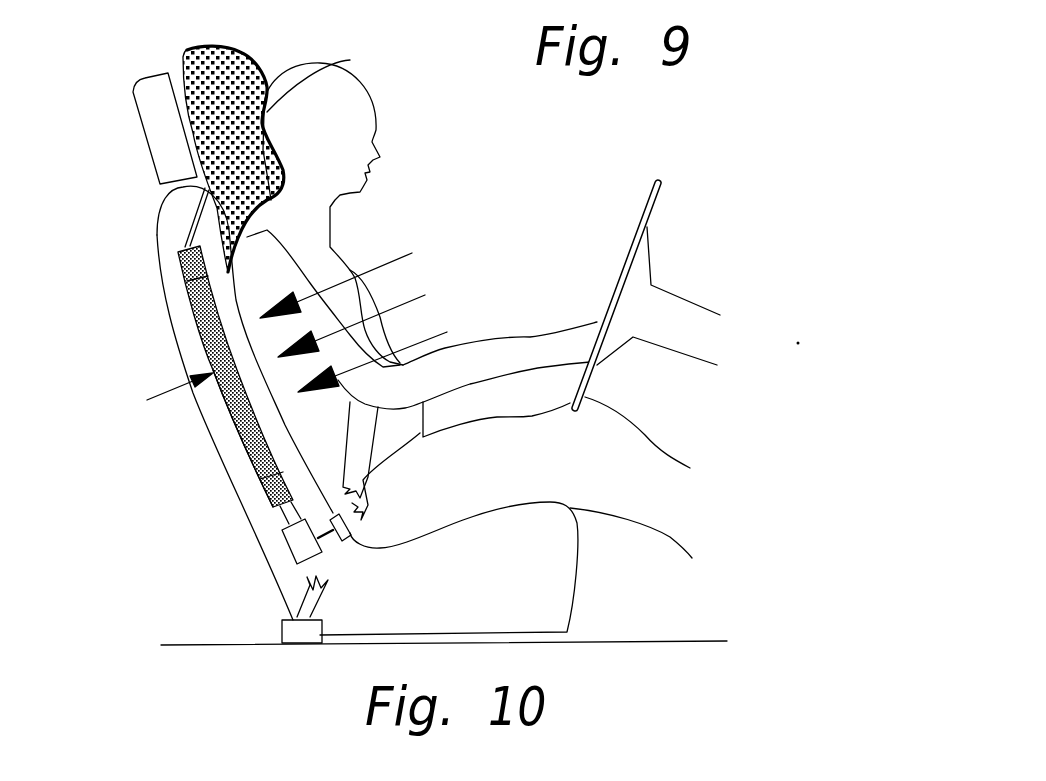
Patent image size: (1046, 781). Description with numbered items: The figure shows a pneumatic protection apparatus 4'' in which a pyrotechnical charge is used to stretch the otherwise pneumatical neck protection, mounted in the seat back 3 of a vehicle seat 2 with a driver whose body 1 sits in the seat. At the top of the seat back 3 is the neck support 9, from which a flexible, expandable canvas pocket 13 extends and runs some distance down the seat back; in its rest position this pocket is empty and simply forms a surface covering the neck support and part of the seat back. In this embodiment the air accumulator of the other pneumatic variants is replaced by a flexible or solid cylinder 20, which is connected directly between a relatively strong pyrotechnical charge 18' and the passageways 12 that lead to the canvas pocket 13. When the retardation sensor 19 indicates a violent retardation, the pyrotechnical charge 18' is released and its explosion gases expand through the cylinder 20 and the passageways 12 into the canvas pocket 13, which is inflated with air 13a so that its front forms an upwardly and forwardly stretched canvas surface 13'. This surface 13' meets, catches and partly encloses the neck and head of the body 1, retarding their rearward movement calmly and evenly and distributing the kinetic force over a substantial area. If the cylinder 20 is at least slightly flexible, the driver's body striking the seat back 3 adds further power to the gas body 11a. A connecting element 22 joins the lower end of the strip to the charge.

The body 1 is at (483, 291).
The vehicle seat 2 is at (506, 568).
The seat back 3 is at (222, 414).
The protection apparatus 4'' is at (156, 402).
The neck support 9 is at (132, 128).
The gas body 11a is at (183, 376).
The passageways 12 is at (139, 217).
The canvas pocket 13 is at (173, 151).
The air 13a is at (241, 136).
The canvas surface 13' is at (326, 67).
The pyrotechnical charge 18' is at (244, 569).
The retardation sensor 19 is at (364, 567).
The cylinder 20 is at (192, 447).
The connecting element 22 is at (219, 519).